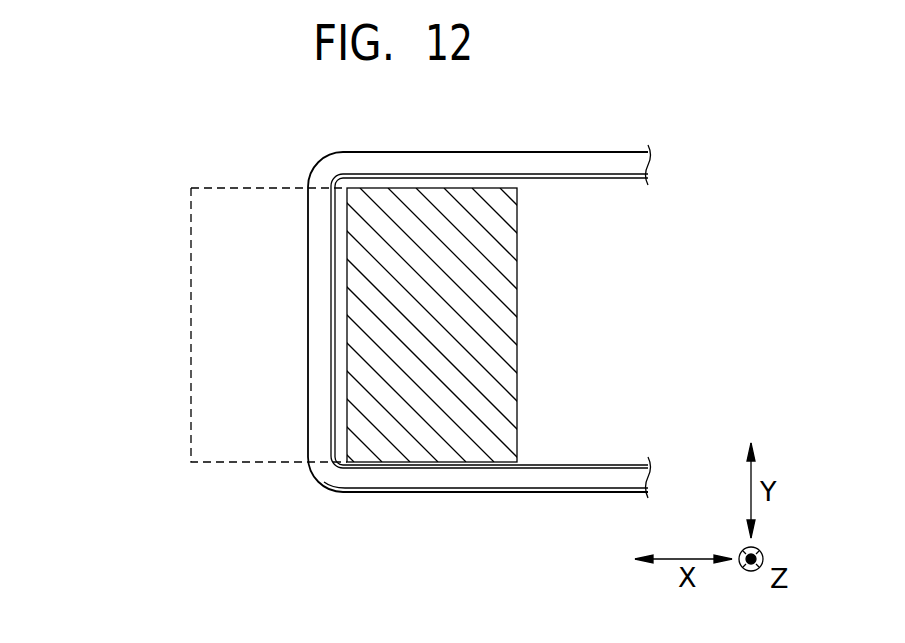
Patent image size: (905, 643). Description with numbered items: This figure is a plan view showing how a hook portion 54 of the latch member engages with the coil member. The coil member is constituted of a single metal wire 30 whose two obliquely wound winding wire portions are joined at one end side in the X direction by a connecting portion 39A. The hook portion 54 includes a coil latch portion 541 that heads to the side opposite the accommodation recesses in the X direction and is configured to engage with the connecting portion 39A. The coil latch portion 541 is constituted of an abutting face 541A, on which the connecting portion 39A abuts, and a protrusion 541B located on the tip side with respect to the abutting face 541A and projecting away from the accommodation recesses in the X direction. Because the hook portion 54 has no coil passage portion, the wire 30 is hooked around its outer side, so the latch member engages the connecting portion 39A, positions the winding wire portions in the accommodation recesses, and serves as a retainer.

The wire 30 is at (582, 167).
The hook portion 54 is at (455, 210).
The coil latch portion 541 is at (168, 395).
The abutting face 541A is at (345, 245).
The protrusion 541B is at (190, 218).
The connecting portion 39A is at (322, 343).